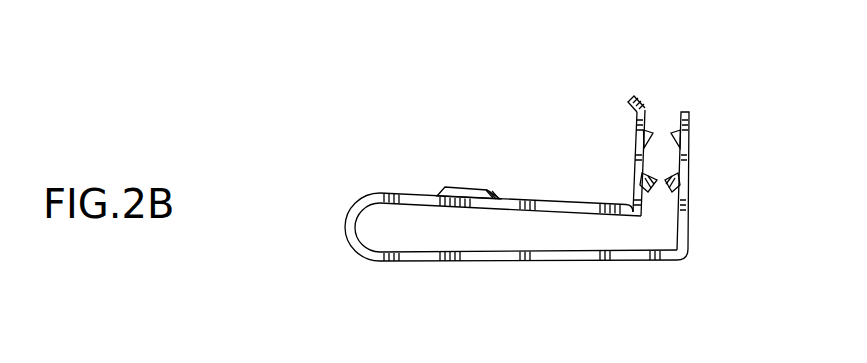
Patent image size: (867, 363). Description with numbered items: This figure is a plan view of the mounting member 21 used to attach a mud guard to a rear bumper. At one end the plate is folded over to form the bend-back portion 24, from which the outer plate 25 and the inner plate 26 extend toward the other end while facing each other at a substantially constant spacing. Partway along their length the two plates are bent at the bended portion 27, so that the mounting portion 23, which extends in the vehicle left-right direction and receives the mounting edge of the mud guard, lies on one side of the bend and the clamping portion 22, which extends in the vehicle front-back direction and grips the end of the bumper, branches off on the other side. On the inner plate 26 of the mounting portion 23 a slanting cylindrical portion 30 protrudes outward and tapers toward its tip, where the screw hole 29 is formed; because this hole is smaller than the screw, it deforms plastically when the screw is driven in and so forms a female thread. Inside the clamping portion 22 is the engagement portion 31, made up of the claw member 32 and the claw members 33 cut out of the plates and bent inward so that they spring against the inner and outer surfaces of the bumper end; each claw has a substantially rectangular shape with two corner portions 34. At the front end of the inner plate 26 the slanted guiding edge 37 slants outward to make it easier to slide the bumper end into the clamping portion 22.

The mounting member 21 is at (319, 180).
The clamping portion 22 is at (700, 167).
The mounting portion 23 is at (458, 263).
The bend-back portion 24 is at (343, 234).
The outer plate 25 is at (403, 263).
The inner plate 26 is at (417, 193).
The bended portion 27 is at (630, 203).
The screw hole 29 is at (467, 188).
The slanting cylindrical portion 30 is at (502, 197).
The engagement portion 31 is at (655, 228).
The claw member 32 is at (673, 132).
The claw member 33 is at (648, 193).
The corner portion 34 is at (647, 168).
The slanted guiding edge 37 is at (628, 97).